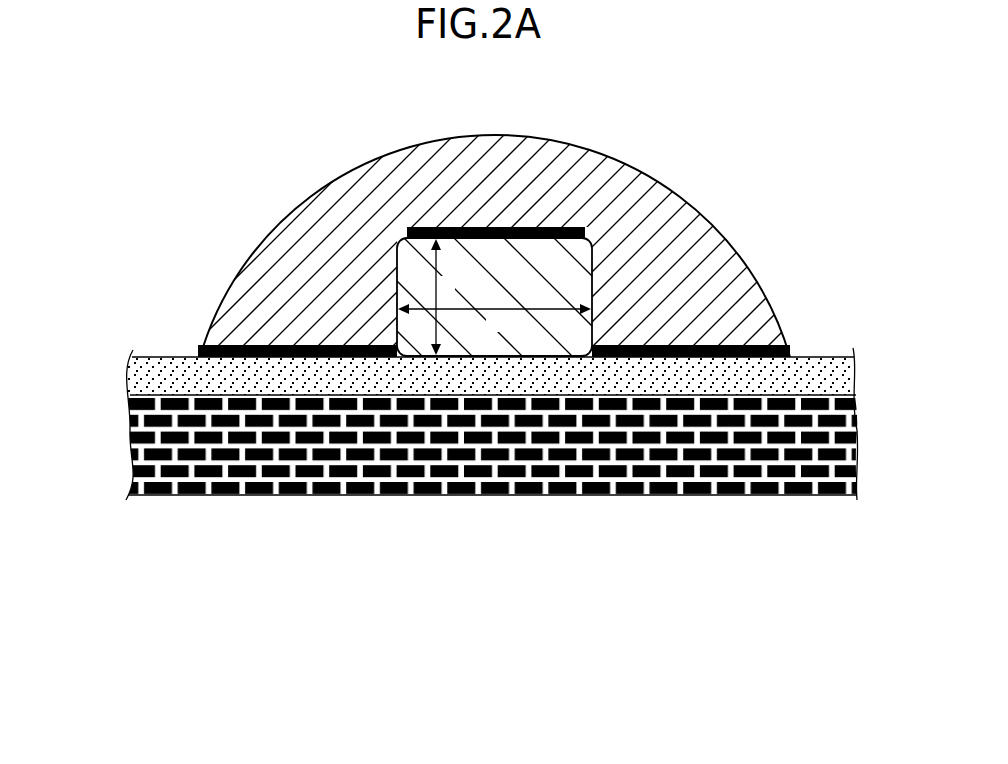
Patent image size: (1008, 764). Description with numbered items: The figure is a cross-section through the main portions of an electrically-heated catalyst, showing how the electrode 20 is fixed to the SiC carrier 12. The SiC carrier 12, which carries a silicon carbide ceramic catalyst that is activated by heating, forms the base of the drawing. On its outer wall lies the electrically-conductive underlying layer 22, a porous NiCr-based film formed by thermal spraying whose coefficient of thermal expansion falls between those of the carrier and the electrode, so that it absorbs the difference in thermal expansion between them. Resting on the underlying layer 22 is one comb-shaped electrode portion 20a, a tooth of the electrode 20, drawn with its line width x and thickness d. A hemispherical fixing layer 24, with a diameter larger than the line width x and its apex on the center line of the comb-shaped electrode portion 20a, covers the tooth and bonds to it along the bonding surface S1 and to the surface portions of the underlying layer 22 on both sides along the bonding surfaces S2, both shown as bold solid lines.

The SiC carrier 12 is at (797, 495).
The underlying layer 22 is at (135, 372).
The fixing layer 24 is at (586, 152).
The electrode 20 is at (592, 297).
The comb-shaped electrode portion 20a is at (579, 263).
The bonding surface S1 is at (428, 228).
The bonding surface S2 is at (197, 352).